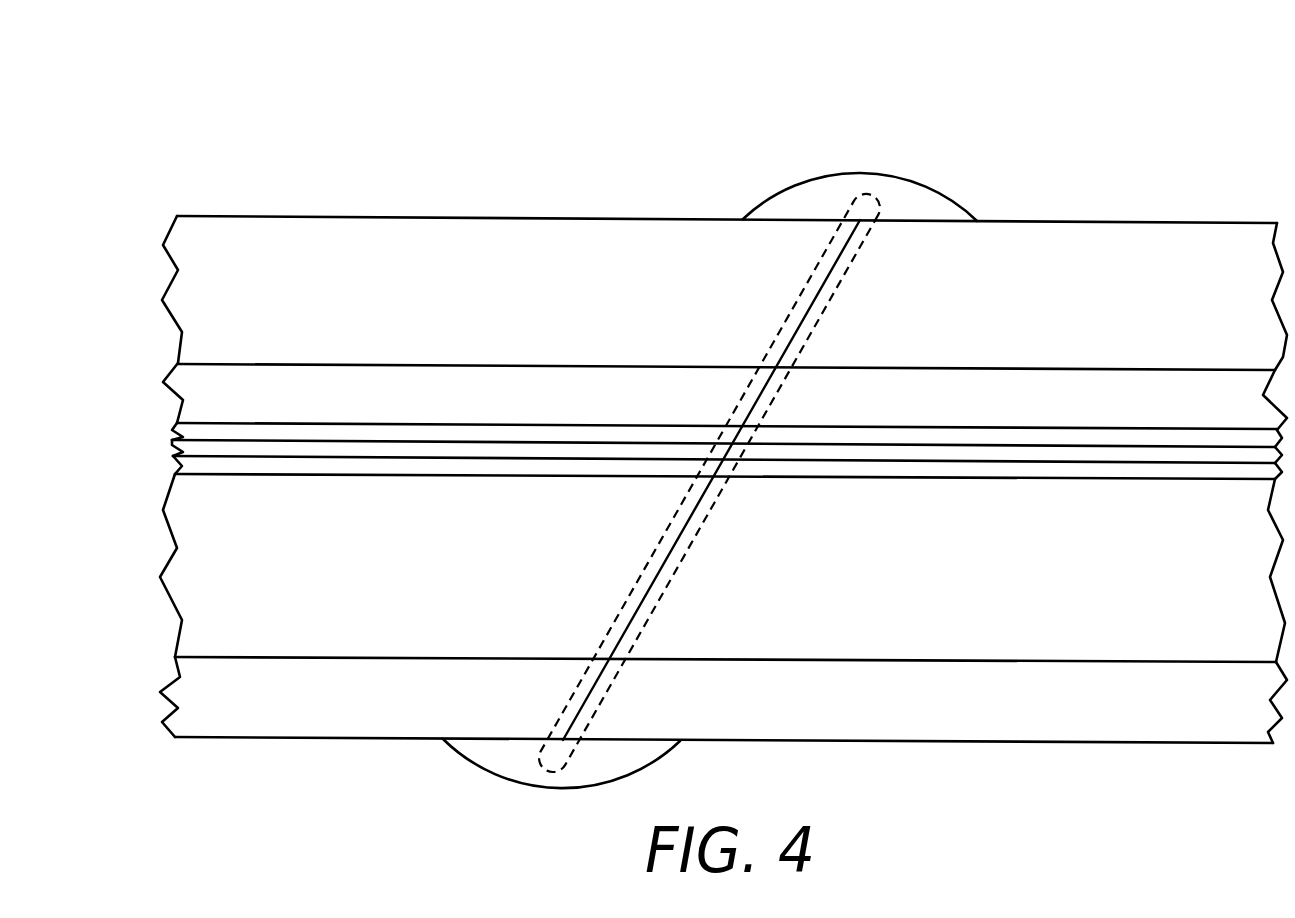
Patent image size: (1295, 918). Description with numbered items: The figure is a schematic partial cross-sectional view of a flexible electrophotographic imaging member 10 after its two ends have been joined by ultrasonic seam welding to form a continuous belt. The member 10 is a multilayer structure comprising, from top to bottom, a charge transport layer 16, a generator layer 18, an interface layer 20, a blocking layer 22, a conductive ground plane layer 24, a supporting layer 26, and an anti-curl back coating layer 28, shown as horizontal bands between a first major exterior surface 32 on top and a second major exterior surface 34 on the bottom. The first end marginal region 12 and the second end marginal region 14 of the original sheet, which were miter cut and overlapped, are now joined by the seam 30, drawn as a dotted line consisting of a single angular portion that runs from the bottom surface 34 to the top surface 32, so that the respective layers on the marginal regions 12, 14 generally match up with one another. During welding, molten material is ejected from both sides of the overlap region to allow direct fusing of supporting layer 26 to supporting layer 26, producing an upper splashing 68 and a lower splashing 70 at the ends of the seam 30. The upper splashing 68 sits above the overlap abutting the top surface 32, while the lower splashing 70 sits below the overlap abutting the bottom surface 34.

The flexible electrophotographic imaging member 10 is at (755, 105).
The first end marginal region 12 is at (607, 219).
The second end marginal region 14 is at (1043, 222).
The charge transport layer 16 is at (177, 288).
The generator layer 18 is at (176, 383).
The interface layer 20 is at (176, 430).
The blocking layer 22 is at (172, 452).
The conductive ground plane layer 24 is at (176, 475).
The supporting layer 26 is at (176, 564).
The anti-curl back coating layer 28 is at (176, 687).
The seam 30 is at (660, 593).
The first major exterior surface 32 is at (253, 216).
The second major exterior surface 34 is at (980, 742).
The upper splashing 68 is at (917, 178).
The lower splashing 70 is at (643, 772).